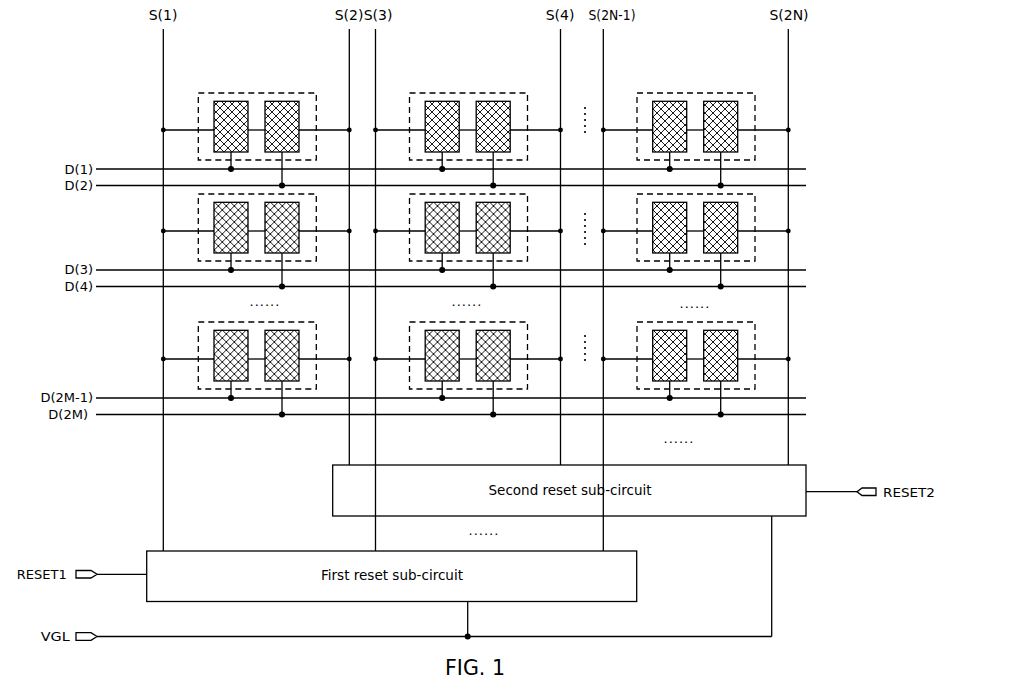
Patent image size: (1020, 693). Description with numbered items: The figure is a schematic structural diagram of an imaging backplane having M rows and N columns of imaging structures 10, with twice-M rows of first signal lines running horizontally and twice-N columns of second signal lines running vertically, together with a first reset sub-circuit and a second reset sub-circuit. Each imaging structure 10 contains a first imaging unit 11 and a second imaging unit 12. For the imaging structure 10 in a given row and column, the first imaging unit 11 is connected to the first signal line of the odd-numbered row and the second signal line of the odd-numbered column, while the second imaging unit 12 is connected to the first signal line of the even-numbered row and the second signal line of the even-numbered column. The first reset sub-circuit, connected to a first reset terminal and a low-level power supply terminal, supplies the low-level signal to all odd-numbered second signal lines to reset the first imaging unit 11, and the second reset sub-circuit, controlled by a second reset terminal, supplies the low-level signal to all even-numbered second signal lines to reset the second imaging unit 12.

The imaging structure 10 is at (252, 93).
The first imaging unit 11 is at (226, 101).
The second imaging unit 12 is at (277, 101).